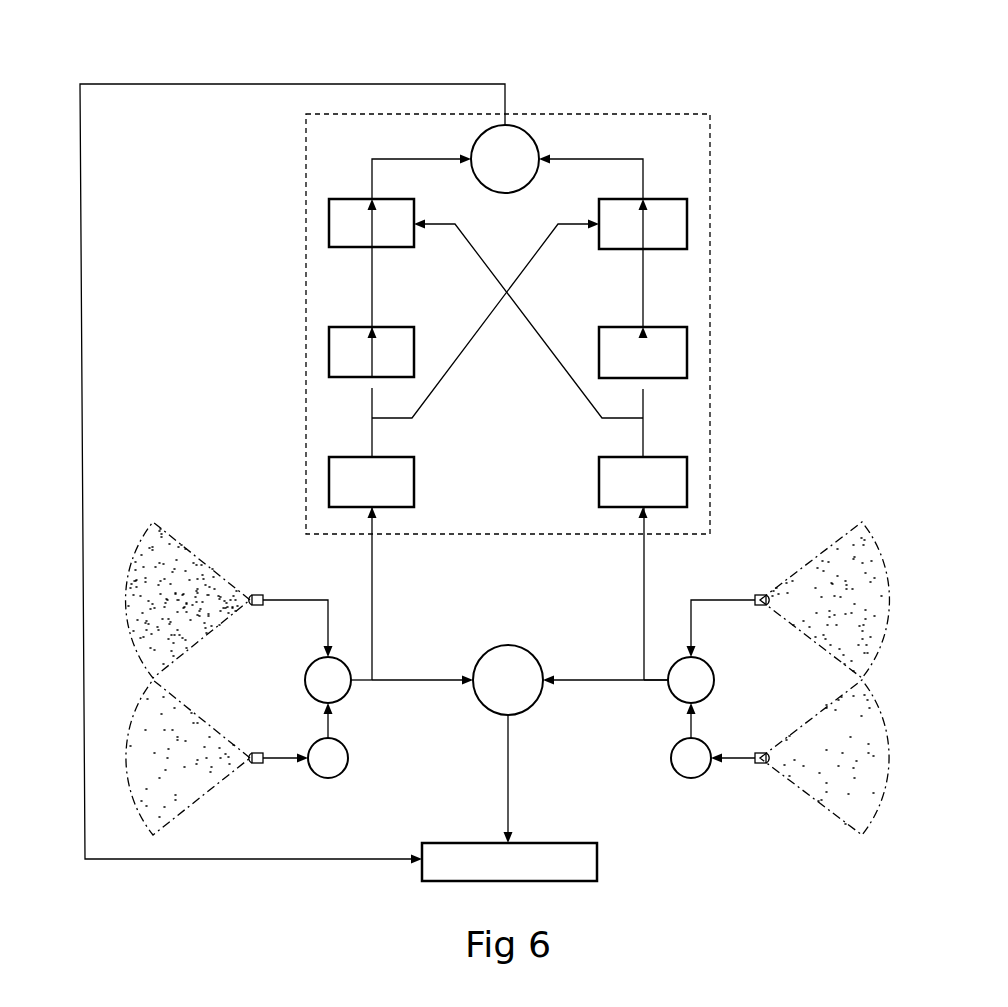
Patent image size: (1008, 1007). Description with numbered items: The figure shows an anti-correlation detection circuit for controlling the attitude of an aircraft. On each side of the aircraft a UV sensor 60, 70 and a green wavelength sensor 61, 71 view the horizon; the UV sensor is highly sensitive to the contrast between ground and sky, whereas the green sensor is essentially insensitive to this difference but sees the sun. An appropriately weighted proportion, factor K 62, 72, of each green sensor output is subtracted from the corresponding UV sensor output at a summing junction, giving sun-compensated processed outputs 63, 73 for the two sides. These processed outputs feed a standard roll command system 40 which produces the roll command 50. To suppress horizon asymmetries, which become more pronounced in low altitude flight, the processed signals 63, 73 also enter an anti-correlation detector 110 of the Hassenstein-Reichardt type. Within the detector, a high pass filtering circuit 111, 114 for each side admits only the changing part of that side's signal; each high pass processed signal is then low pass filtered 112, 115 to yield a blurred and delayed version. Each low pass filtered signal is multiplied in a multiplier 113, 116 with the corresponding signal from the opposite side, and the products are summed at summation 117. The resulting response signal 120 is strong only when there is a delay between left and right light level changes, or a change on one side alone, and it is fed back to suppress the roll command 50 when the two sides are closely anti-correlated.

The roll command system 40 is at (513, 645).
The roll command 50 is at (552, 843).
The UV sensor 60 is at (760, 592).
The green wavelength sensor 61 is at (760, 768).
The factor K 62 is at (670, 767).
The subtraction / processed output 63 is at (667, 690).
The UV sensor 70 is at (258, 592).
The green wavelength sensor 71 is at (258, 768).
The factor K 72 is at (347, 767).
The processed output 73 is at (352, 688).
The anti-correlation detector 110 is at (710, 145).
The high pass filtering circuit 111 is at (329, 474).
The low pass filter 112 is at (329, 352).
The multiplier 113 is at (329, 218).
The high pass filtering circuit 114 is at (687, 474).
The low pass filter 115 is at (687, 352).
The multiplier 116 is at (687, 222).
The summation 117 is at (527, 130).
The response signal 120 is at (80, 190).